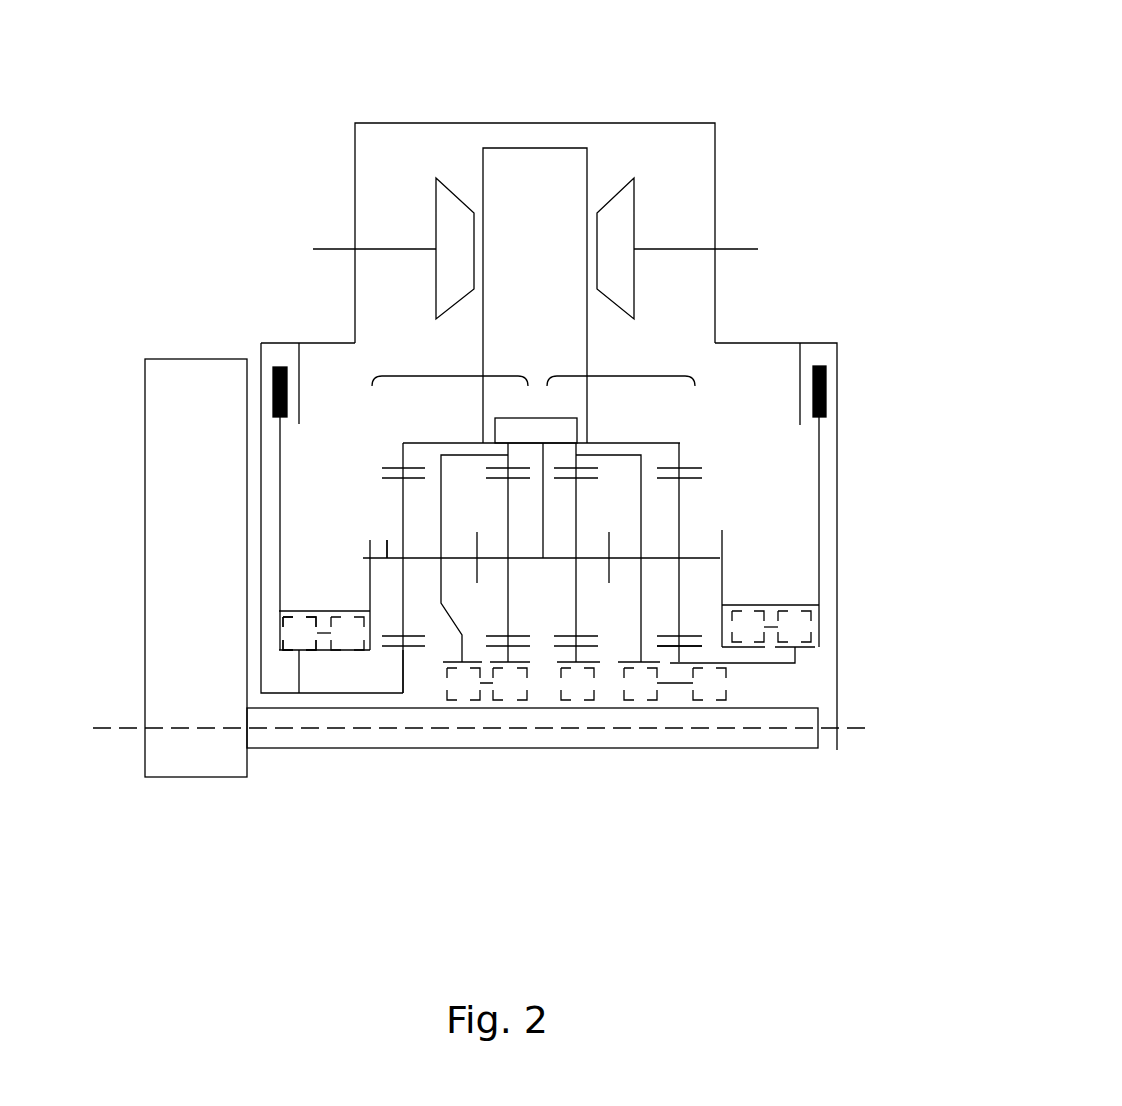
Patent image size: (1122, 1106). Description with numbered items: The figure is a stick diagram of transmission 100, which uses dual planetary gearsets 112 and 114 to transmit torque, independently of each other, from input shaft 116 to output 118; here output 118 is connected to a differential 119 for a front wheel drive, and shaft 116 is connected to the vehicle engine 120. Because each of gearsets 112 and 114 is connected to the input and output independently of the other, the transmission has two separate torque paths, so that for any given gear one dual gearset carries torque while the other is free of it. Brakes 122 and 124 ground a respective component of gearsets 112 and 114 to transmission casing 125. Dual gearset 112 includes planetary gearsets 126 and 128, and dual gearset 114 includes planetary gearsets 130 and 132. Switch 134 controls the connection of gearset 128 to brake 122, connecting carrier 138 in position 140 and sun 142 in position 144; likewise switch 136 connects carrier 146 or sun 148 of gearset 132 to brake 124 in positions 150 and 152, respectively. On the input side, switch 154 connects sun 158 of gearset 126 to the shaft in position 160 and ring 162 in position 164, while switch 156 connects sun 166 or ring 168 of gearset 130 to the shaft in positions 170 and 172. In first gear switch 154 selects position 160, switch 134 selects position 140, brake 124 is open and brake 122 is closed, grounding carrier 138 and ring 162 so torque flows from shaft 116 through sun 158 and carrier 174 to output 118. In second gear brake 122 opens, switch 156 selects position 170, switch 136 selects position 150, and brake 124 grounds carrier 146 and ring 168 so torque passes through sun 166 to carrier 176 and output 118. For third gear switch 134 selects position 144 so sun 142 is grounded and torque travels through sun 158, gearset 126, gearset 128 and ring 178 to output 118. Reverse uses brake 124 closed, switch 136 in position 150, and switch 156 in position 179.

The transmission 100 is at (777, 100).
The dual planetary gearset 112 is at (358, 382).
The dual planetary gearset 114 is at (672, 427).
The input shaft 116 is at (808, 752).
The output 118 is at (535, 408).
The differential 119 is at (538, 165).
The engine 120 is at (183, 536).
The brake 122 is at (275, 385).
The brake 124 is at (827, 372).
The transmission casing 125 is at (260, 346).
The planetary gearset 126 is at (452, 485).
The planetary gearset 128 is at (377, 530).
The planetary gearset 130 is at (605, 493).
The planetary gearset 132 is at (697, 515).
The switch 134 is at (272, 639).
The switch 136 is at (770, 673).
The carrier 138 is at (387, 558).
The position 140 is at (347, 613).
The sun 142 is at (415, 648).
The position 144 is at (300, 623).
The carrier 146 is at (702, 550).
The sun 148 is at (703, 648).
The position 150 is at (750, 610).
The position 152 is at (797, 610).
The switch 154 is at (484, 713).
The switch 156 is at (668, 713).
The sun 158 is at (515, 637).
The position 160 is at (523, 700).
The ring 162 is at (488, 467).
The position 164 is at (430, 710).
The sun 166 is at (588, 637).
The ring 168 is at (590, 460).
The position 170 is at (574, 700).
The position 172 is at (640, 700).
The carrier 174 is at (525, 557).
The carrier 176 is at (562, 557).
The ring 178 is at (403, 443).
The position 179 is at (713, 700).